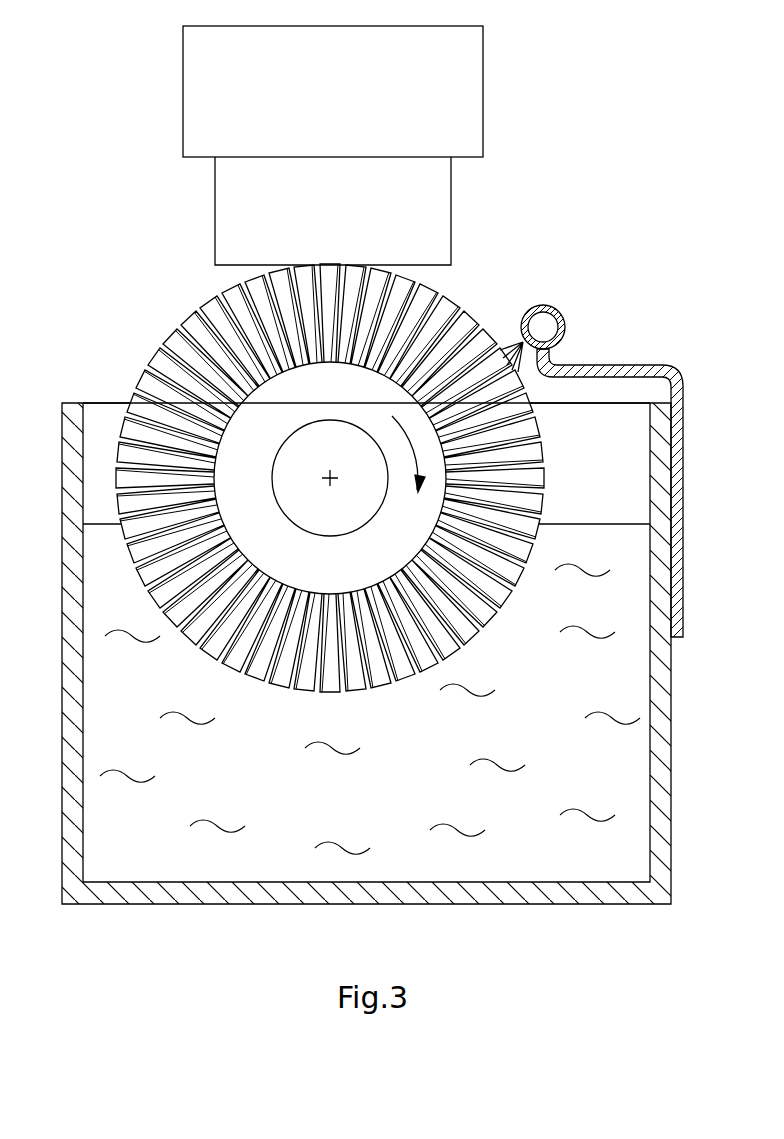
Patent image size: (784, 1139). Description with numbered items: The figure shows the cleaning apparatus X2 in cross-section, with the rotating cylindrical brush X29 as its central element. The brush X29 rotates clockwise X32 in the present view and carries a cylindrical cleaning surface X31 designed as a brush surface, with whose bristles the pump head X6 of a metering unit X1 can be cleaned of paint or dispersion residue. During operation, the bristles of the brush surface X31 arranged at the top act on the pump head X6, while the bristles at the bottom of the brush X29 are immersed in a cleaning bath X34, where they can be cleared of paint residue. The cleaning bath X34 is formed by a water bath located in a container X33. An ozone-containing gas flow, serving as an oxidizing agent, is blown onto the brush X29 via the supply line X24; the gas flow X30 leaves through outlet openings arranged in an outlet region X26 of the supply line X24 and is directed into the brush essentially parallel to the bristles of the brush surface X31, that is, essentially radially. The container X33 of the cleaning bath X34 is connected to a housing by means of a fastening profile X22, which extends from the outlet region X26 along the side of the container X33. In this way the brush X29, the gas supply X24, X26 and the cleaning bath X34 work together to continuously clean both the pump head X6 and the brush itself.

The metering unit X1 is at (142, 78).
The cleaning apparatus X2 is at (599, 175).
The pump head X6 is at (242, 193).
The fastening profile X22 is at (632, 370).
The supply line X24 is at (553, 276).
The outlet region X26 is at (557, 315).
The brush X29 is at (311, 478).
The spray jet X30 is at (512, 342).
The brush surface X31 is at (190, 352).
The clockwise rotation X32 is at (415, 440).
The container X33 is at (243, 890).
The cleaning bath X34 is at (415, 802).